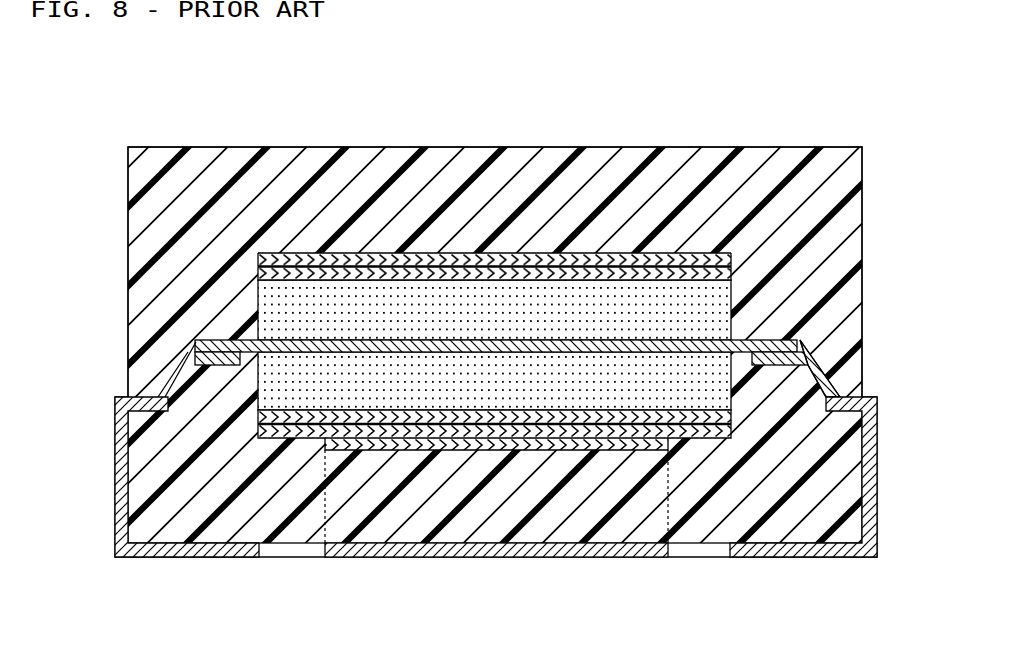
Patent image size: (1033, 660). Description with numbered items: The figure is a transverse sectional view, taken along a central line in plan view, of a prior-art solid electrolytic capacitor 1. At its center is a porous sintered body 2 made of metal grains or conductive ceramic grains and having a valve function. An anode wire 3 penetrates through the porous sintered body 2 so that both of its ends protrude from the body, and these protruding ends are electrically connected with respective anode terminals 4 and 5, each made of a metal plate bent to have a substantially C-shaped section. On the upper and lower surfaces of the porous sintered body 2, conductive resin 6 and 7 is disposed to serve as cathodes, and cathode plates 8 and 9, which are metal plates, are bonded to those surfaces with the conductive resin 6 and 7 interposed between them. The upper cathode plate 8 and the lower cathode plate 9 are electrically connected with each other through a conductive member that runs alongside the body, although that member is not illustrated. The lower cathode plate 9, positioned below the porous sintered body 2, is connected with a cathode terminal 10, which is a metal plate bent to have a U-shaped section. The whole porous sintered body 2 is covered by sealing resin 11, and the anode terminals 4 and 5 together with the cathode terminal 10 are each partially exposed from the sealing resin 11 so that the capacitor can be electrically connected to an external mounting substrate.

The solid electrolytic capacitor 1 is at (415, 82).
The porous sintered body 2 is at (714, 312).
The anode wire 3 is at (596, 340).
The anode terminal 4 is at (115, 490).
The anode terminal 5 is at (878, 438).
The conductive resin 6 is at (258, 273).
The conductive resin 7 is at (259, 417).
The cathode plate 8 is at (258, 258).
The cathode plate 9 is at (259, 433).
The cathode terminal 10 is at (508, 557).
The sealing resin 11 is at (203, 148).